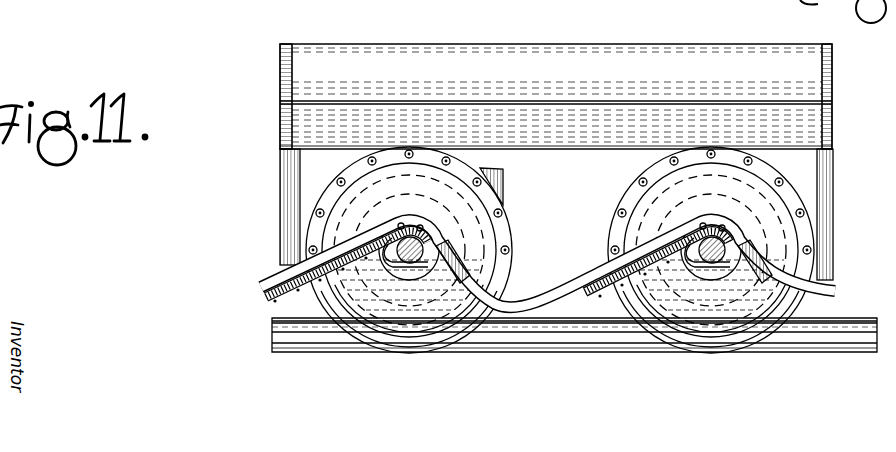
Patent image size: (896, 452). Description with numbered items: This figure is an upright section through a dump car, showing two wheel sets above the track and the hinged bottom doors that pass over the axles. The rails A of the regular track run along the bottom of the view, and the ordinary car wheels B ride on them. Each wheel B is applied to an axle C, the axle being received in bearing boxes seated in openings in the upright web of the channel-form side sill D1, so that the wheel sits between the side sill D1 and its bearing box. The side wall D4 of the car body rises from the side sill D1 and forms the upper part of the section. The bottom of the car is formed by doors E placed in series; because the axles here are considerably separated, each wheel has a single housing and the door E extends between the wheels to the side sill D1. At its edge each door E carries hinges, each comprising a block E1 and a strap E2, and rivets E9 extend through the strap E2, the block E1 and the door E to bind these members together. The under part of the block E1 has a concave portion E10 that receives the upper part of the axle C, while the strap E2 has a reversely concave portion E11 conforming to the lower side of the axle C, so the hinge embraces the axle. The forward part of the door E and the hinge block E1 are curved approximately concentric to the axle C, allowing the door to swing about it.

The side wall D4 is at (285, 127).
The side sill D1 is at (284, 242).
The car wheel B is at (424, 302).
The axle C is at (433, 292).
The reversely concave portion E11 is at (401, 268).
The door E is at (266, 300).
The rivet E9 is at (362, 233).
The strap E2 is at (352, 281).
The block E1 is at (397, 222).
The concave portion E10 is at (432, 222).
The rail A is at (526, 338).